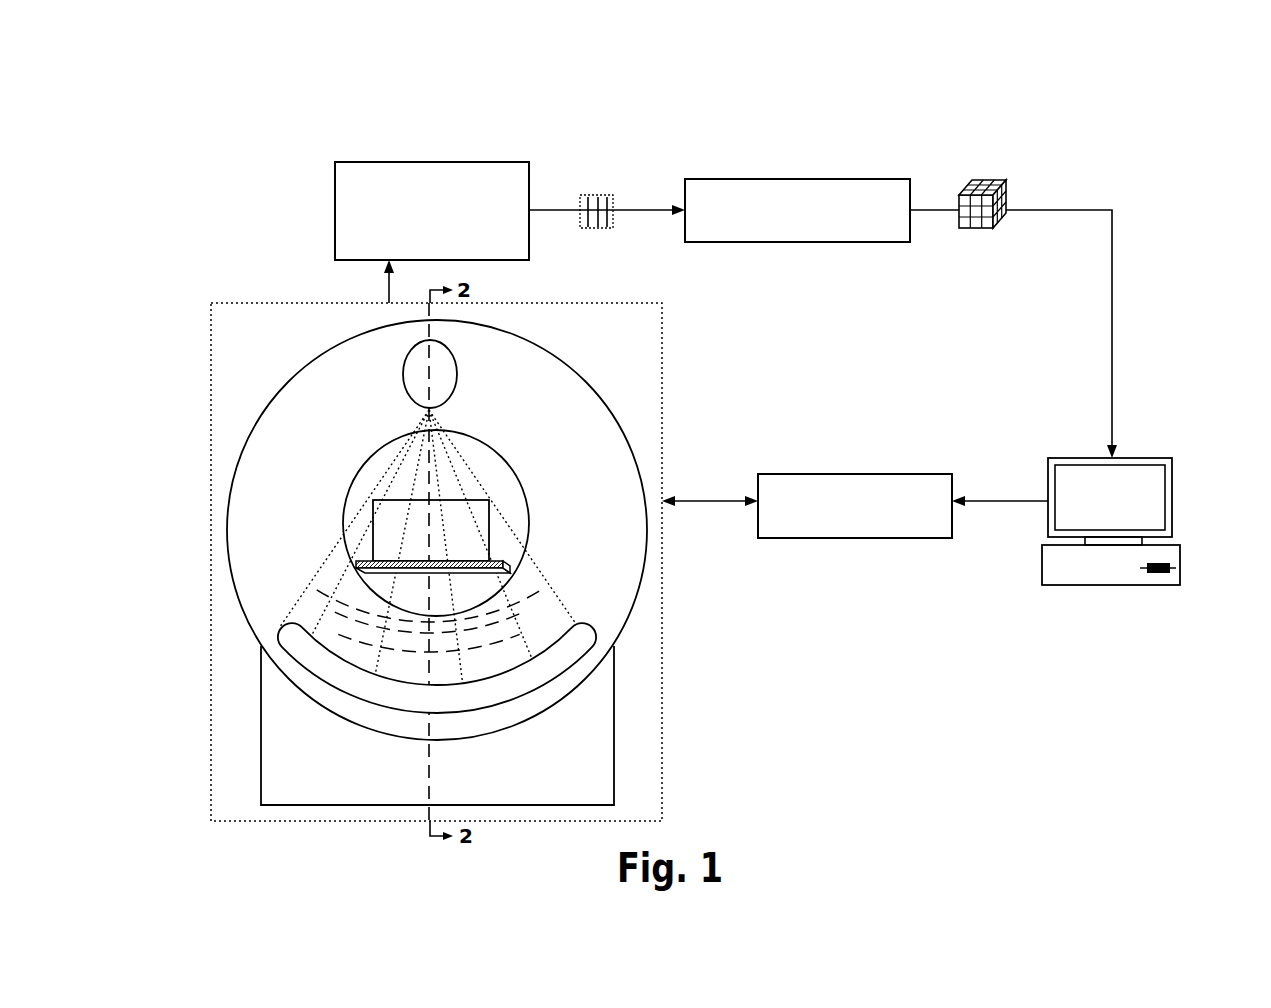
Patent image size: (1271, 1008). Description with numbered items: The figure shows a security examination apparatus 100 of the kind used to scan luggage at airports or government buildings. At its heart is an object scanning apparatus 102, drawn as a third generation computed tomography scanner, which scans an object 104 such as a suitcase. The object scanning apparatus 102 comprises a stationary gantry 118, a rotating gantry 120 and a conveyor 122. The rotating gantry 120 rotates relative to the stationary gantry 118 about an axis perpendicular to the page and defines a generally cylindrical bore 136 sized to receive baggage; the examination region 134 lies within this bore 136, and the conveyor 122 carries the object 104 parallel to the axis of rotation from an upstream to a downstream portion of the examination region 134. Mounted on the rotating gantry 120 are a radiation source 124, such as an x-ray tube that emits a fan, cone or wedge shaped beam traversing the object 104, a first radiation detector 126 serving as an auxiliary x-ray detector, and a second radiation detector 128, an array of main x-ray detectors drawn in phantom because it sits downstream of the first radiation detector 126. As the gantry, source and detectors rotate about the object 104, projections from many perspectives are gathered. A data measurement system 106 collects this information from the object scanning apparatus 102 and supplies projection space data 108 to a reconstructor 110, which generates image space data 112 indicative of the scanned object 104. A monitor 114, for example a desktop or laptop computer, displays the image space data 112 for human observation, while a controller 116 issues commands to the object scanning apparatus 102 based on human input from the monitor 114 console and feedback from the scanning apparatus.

The security examination apparatus 100 is at (177, 88).
The object scanning apparatus 102 is at (210, 303).
The object 104 is at (373, 510).
The data measurement system 106 is at (530, 163).
The projection space data 108 is at (597, 193).
The reconstructor 110 is at (798, 178).
The image space data 112 is at (975, 228).
The monitor 114 is at (1138, 457).
The controller 116 is at (855, 474).
The stationary gantry 118 is at (261, 721).
The rotating gantry 120 is at (228, 497).
The conveyor 122 is at (510, 567).
The radiation source 124 is at (452, 349).
The first radiation detector 126 is at (295, 663).
The second radiation detector 128 is at (553, 602).
The examination region 134 is at (490, 497).
The cylindrical bore 136 is at (492, 470).